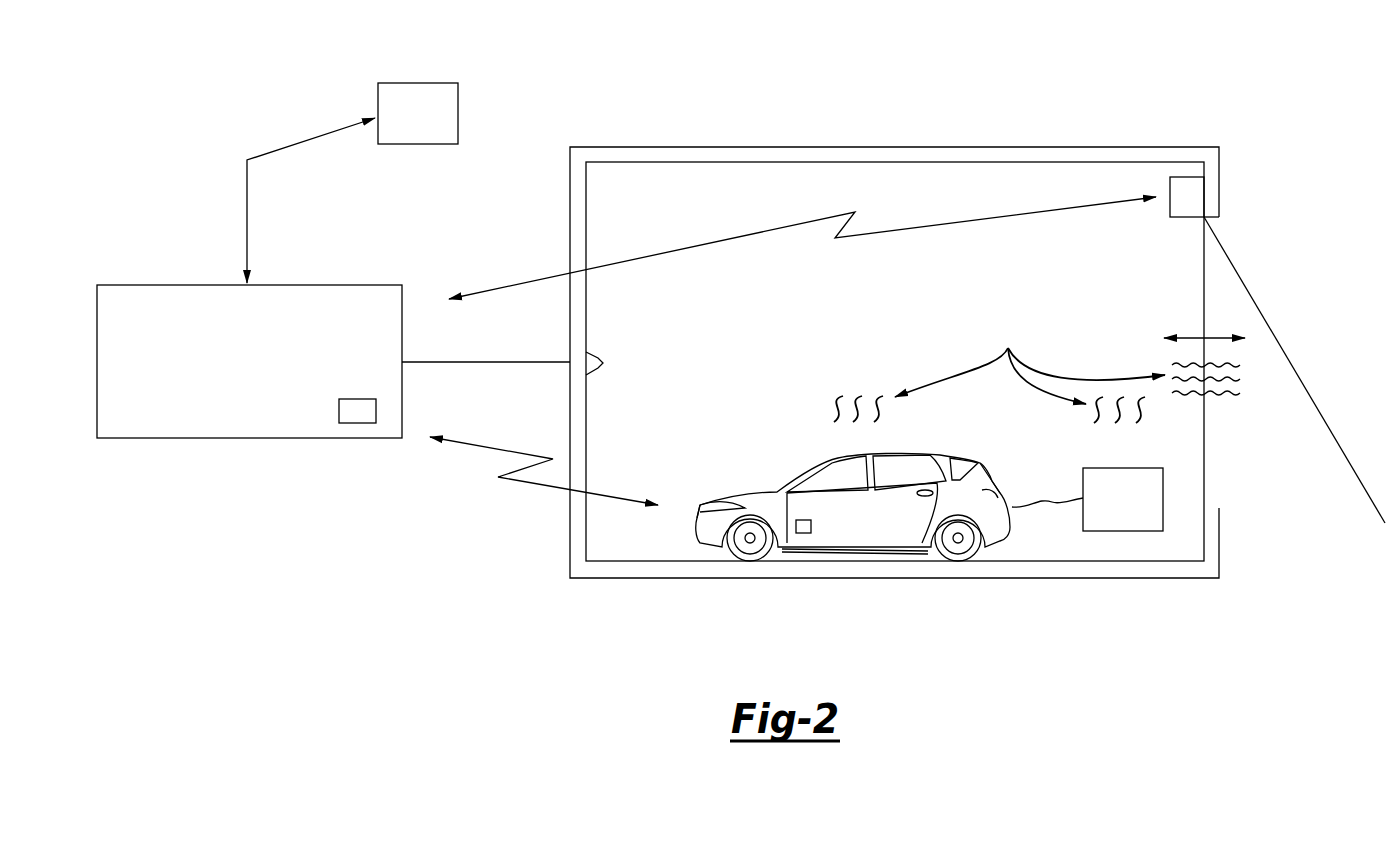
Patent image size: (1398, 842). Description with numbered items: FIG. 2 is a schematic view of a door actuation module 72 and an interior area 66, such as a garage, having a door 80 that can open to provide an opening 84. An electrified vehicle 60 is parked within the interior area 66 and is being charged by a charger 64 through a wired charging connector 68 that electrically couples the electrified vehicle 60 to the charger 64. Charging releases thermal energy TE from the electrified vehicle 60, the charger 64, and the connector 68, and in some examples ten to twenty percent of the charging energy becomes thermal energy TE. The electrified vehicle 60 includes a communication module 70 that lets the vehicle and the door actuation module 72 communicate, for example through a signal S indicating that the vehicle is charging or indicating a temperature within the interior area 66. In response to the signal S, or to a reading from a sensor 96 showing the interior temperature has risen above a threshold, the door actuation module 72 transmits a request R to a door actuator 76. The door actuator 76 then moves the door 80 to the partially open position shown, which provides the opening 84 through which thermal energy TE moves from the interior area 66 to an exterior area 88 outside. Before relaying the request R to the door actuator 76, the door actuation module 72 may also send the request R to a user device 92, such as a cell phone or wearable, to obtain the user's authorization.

The electrified vehicle 60 is at (748, 491).
The charger 64 is at (1163, 497).
The interior area 66 is at (882, 329).
The wired charging connector 68 is at (1026, 508).
The communication module 70 is at (803, 533).
The door actuation module 72 is at (97, 370).
The door actuator 76 is at (1188, 177).
The door 80 is at (1282, 348).
The opening 84 is at (1274, 489).
The exterior area 88 is at (1122, 713).
The user device 92 is at (458, 113).
The sensor 96 is at (590, 352).
The request R is at (968, 222).
The signal S is at (500, 443).
The thermal energy TE is at (1037, 371).